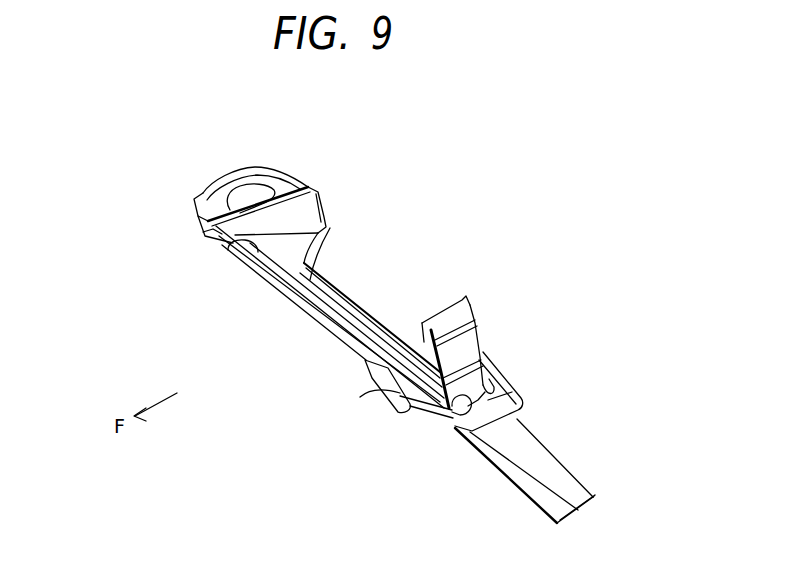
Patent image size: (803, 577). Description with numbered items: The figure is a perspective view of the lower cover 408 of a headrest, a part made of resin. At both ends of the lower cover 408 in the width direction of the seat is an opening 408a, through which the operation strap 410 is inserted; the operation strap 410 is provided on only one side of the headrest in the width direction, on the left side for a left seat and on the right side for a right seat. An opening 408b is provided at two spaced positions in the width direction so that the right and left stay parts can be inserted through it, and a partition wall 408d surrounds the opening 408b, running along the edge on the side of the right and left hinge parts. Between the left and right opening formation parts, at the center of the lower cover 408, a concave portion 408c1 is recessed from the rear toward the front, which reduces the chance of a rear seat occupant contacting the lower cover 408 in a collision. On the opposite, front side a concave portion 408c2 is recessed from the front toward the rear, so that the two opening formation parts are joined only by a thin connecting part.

The lower cover 408 is at (231, 158).
The opening 408a is at (203, 232).
The opening 408b is at (224, 242).
The concave portion 408c1 is at (374, 295).
The concave portion 408c2 is at (311, 303).
The partition wall 408d is at (301, 193).
The operation strap 410 is at (548, 457).